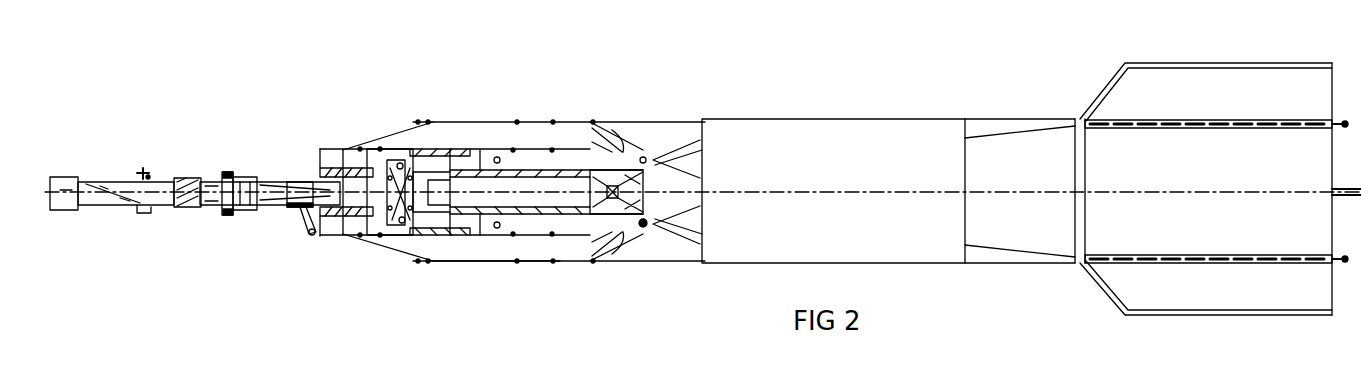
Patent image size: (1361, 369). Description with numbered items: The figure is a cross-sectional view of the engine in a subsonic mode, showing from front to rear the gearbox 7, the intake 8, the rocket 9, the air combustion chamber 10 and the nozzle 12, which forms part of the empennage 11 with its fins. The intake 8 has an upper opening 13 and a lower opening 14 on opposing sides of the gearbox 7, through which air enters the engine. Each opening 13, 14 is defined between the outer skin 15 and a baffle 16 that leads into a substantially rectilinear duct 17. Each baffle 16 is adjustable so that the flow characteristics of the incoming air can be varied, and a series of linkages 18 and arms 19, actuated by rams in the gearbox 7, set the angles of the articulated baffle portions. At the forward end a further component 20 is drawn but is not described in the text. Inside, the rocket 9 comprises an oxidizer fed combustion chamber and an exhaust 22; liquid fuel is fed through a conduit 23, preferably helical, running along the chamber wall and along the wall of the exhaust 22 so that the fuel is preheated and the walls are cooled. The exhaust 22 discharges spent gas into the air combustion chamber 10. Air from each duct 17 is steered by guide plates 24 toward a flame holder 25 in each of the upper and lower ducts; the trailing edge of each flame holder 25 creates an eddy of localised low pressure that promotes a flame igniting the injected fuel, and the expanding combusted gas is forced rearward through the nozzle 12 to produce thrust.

The gearbox 7 is at (268, 240).
The intake 8 is at (538, 280).
The rocket 9 is at (567, 187).
The air combustion chamber 10 is at (828, 118).
The empennage 11 is at (1140, 288).
The nozzle 12 is at (1130, 85).
The upper opening 13 is at (360, 125).
The lower opening 14 is at (345, 250).
The outer skin 15 is at (430, 120).
The baffle 16 is at (453, 150).
The duct 17 is at (530, 130).
The linkages 18 is at (372, 172).
The arms 19 is at (398, 160).
The end piece 20 is at (117, 181).
The exhaust 22 is at (645, 195).
The conduit 23 is at (540, 163).
The guide plates 24 is at (613, 137).
The flame holders 25 is at (682, 150).